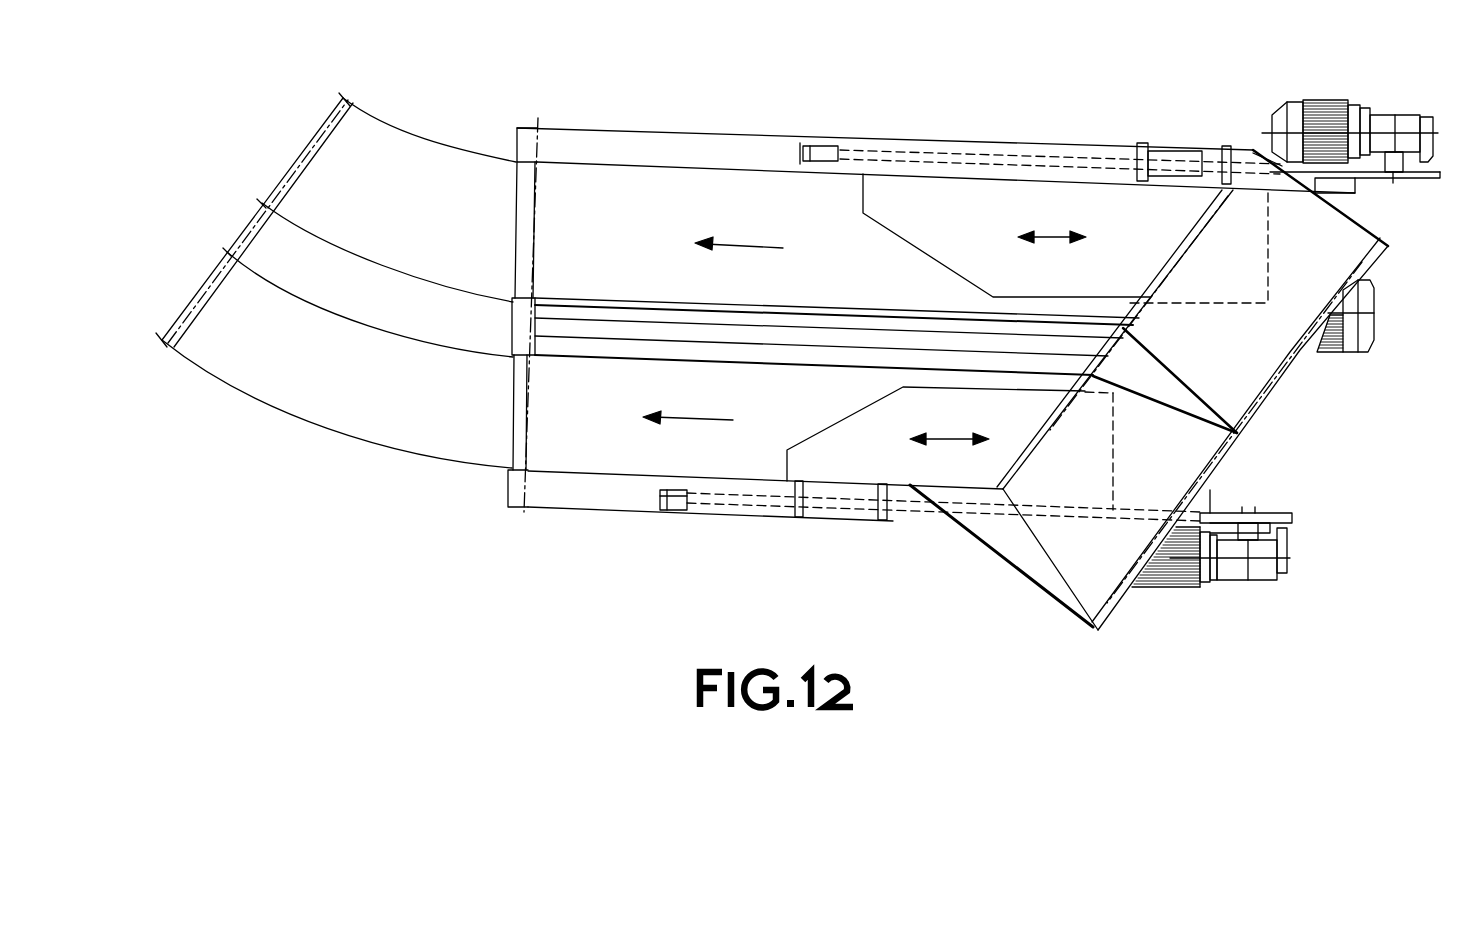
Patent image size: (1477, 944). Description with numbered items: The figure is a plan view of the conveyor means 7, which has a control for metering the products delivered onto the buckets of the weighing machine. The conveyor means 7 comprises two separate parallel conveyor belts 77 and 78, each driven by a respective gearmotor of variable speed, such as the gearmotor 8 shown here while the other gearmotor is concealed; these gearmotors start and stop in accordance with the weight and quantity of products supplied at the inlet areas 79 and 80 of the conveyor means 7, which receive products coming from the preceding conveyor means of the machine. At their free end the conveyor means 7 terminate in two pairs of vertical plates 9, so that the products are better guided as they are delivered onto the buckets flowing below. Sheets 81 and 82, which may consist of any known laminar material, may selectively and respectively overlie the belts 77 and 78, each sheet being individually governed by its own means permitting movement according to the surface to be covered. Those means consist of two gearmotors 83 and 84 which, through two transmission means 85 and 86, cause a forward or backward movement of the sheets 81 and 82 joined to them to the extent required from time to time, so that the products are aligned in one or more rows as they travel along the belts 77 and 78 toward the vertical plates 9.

The conveyor means 7 is at (640, 132).
The gearmotor 8 is at (1350, 340).
The vertical plates 9 is at (418, 138).
The conveyor belt 77 is at (592, 457).
The conveyor belt 78 is at (765, 192).
The inlet area 79 is at (1193, 455).
The inlet area 80 is at (1343, 247).
The sheet 81 is at (862, 463).
The sheet 82 is at (1025, 203).
The gearmotor 83 is at (1200, 587).
The gearmotor 84 is at (1343, 110).
The transmission means 85 is at (757, 498).
The transmission means 86 is at (920, 153).